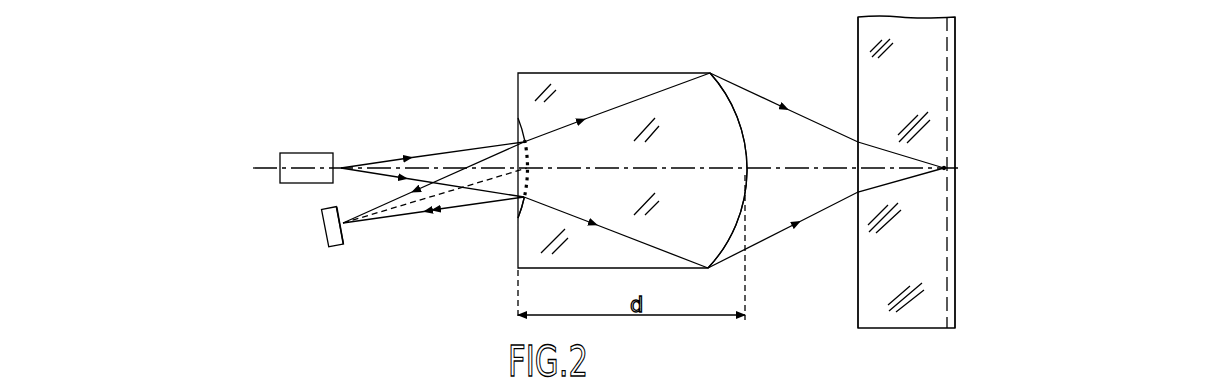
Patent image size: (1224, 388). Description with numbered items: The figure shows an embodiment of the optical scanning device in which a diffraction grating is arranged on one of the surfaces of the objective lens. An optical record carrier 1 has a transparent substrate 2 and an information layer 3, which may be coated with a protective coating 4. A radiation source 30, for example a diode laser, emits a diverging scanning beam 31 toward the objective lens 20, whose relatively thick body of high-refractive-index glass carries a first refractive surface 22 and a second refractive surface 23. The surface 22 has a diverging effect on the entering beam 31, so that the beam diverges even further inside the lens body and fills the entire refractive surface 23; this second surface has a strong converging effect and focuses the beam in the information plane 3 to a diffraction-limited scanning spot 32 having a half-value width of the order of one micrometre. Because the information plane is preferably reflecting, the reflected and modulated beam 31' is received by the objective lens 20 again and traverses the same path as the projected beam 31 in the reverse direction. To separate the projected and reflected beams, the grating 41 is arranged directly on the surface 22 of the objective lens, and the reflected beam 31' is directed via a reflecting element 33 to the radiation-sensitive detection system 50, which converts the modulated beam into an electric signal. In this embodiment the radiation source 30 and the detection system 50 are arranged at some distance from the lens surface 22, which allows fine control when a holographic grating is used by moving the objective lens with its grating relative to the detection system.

The optical record carrier 1 is at (844, 55).
The transparent substrate 2 is at (877, 316).
The information layer 3 is at (946, 318).
The protective coating 4 is at (951, 328).
The objective lens 20 is at (623, 54).
The first refractive surface 22 is at (521, 130).
The second refractive surface 23 is at (725, 247).
The radiation source 30 is at (303, 152).
The scanning beam 31 is at (432, 157).
The reflected and modulated beam 31' is at (435, 200).
The scanning spot 32 is at (946, 166).
The reflective surface 33 is at (344, 226).
The grating 41 is at (522, 188).
The radiation-sensitive detection system 50 is at (322, 228).